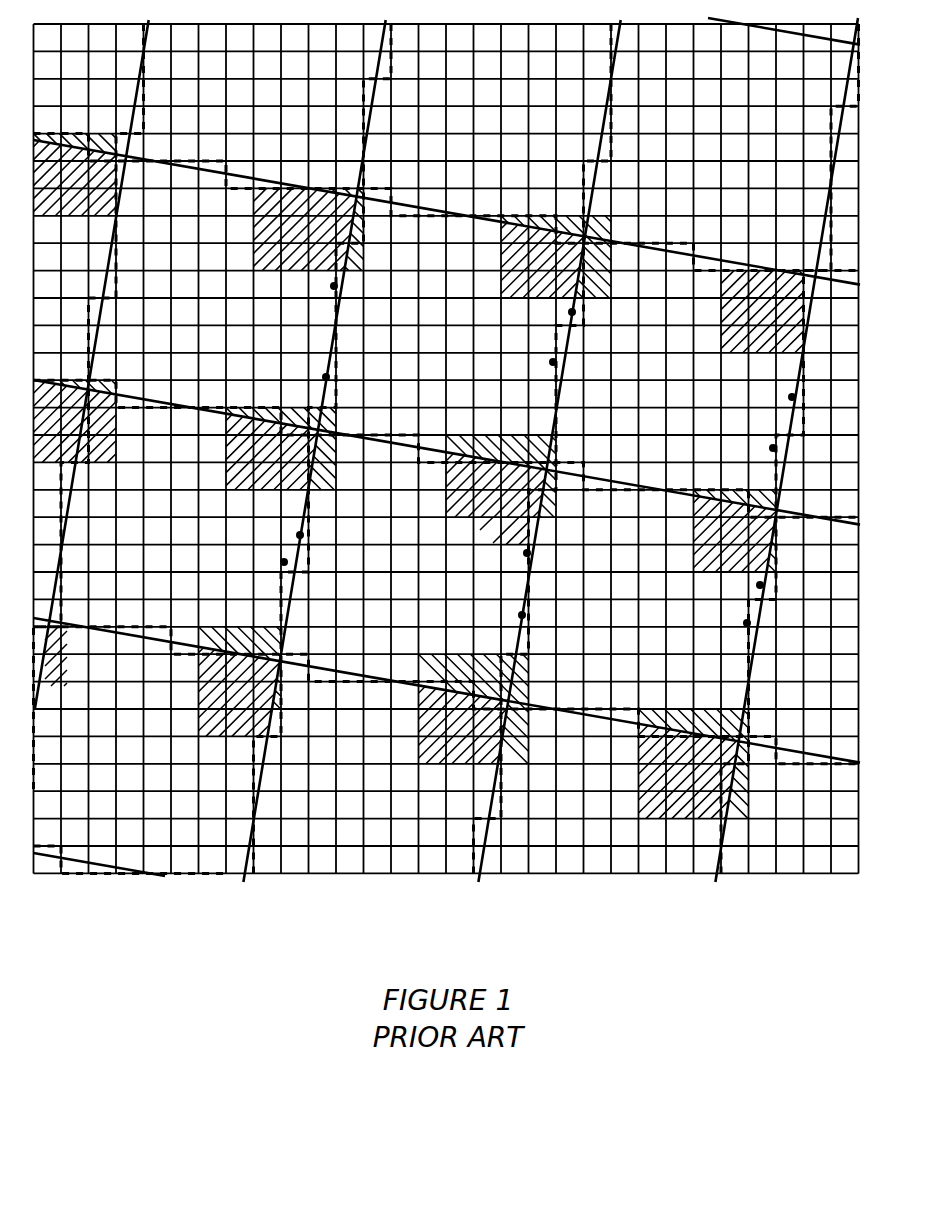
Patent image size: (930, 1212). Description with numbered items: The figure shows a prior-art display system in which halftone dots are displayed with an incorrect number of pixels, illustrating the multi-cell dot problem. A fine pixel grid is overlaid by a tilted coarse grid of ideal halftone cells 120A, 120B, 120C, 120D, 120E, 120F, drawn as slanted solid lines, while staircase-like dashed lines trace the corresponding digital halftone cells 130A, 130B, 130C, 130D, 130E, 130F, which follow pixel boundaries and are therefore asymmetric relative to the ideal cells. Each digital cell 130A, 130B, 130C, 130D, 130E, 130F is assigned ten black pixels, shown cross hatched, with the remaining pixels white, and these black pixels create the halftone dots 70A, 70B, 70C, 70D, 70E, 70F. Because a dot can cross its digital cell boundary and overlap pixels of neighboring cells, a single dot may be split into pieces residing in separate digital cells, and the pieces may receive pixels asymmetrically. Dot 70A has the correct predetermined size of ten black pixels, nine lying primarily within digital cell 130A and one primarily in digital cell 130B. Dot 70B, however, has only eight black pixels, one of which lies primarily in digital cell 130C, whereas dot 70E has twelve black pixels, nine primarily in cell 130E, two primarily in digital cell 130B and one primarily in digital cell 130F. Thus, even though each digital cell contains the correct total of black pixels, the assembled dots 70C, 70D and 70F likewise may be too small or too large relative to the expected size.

The halftone dot 70A is at (309, 229).
The halftone dot 70B is at (556, 257).
The halftone dot 70C is at (762, 312).
The halftone dot 70D is at (281, 449).
The halftone dot 70E is at (501, 490).
The halftone dot 70F is at (735, 531).
The ideal halftone cell 120A is at (326, 377).
The ideal halftone cell 120B is at (572, 312).
The ideal halftone cell 120C is at (792, 397).
The ideal halftone cell 120D is at (300, 535).
The ideal halftone cell 120E is at (522, 615).
The ideal halftone cell 120F is at (760, 585).
The digital halftone cell 130A is at (334, 286).
The digital halftone cell 130B is at (553, 362).
The digital halftone cell 130C is at (773, 448).
The digital halftone cell 130D is at (284, 562).
The digital halftone cell 130E is at (527, 553).
The digital halftone cell 130F is at (747, 623).